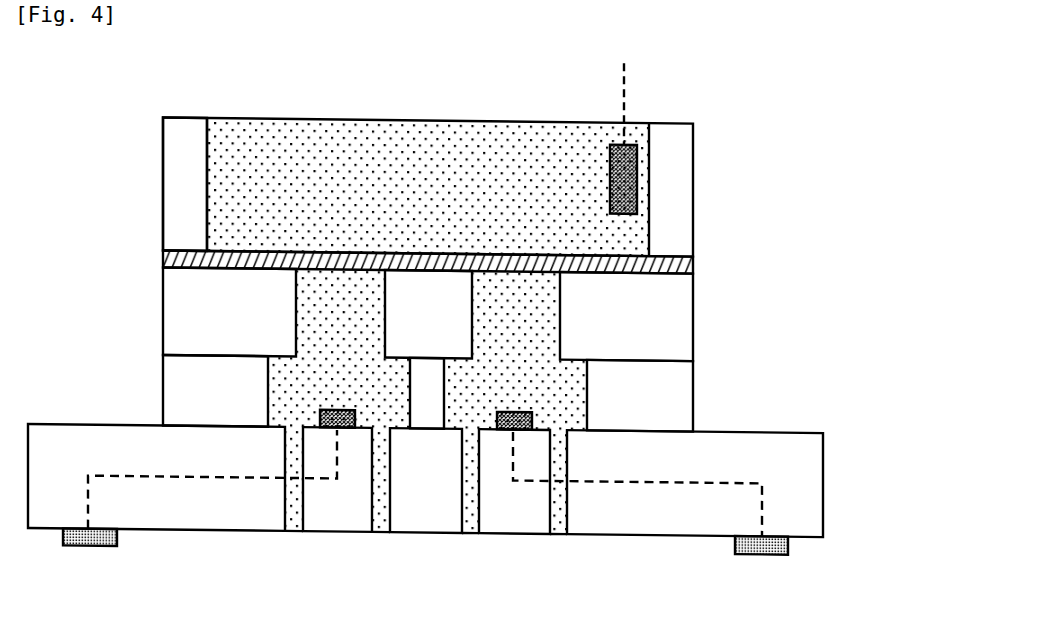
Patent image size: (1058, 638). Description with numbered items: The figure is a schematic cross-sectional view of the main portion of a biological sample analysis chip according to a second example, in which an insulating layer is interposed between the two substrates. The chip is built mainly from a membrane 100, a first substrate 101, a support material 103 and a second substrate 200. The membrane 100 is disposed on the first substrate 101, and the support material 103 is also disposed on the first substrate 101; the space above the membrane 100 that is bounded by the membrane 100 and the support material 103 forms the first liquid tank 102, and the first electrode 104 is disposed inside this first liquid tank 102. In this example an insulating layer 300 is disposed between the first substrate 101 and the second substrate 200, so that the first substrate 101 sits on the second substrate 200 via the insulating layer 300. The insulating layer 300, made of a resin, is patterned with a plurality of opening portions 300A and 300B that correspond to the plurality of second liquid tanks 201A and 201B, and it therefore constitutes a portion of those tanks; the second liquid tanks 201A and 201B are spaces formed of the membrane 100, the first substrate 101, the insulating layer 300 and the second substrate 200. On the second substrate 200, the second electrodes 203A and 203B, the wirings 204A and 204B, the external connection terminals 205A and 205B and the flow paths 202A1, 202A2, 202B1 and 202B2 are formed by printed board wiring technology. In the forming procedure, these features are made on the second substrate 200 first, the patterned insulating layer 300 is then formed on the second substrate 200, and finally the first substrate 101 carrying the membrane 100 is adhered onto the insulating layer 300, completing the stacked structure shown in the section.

The membrane 100 is at (660, 258).
The first substrate 101 is at (703, 268).
The first liquid tank 102 is at (408, 132).
The support material 103 is at (170, 153).
The first electrode 104 is at (628, 140).
The second substrate 200 is at (830, 424).
The second liquid tank 201A is at (348, 305).
The second liquid tank 201B is at (515, 314).
The flow path 202A1 is at (295, 514).
The flow path 202A2 is at (378, 511).
The flow path 202B1 is at (470, 512).
The flow path 202B2 is at (555, 511).
The second electrode 203A is at (348, 423).
The second electrode 203B is at (505, 422).
The wiring 204A is at (218, 478).
The wiring 204B is at (673, 477).
The external connection terminal 205A is at (90, 549).
The external connection terminal 205B is at (760, 550).
The insulating layer 300 is at (703, 354).
The opening portion 300A is at (268, 407).
The opening portion 300B is at (578, 384).